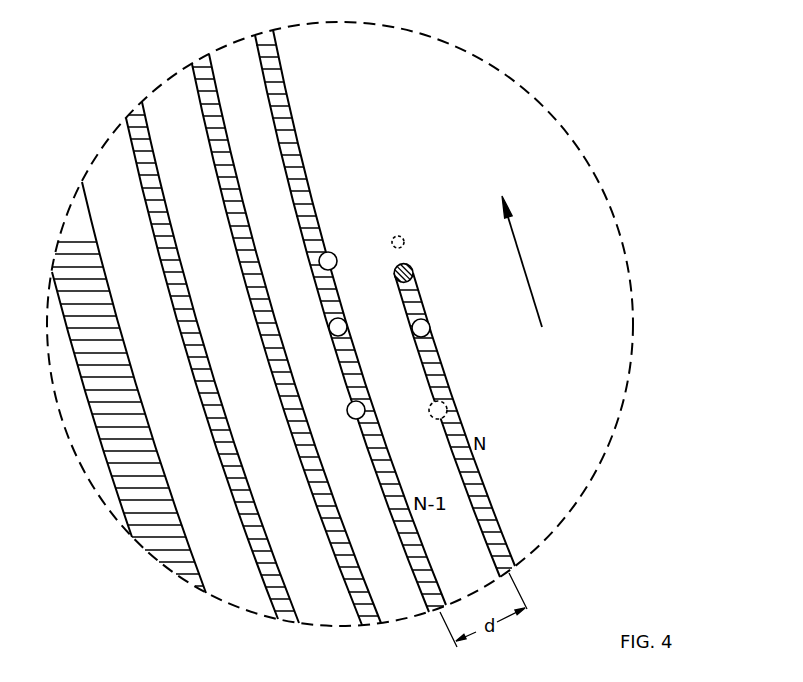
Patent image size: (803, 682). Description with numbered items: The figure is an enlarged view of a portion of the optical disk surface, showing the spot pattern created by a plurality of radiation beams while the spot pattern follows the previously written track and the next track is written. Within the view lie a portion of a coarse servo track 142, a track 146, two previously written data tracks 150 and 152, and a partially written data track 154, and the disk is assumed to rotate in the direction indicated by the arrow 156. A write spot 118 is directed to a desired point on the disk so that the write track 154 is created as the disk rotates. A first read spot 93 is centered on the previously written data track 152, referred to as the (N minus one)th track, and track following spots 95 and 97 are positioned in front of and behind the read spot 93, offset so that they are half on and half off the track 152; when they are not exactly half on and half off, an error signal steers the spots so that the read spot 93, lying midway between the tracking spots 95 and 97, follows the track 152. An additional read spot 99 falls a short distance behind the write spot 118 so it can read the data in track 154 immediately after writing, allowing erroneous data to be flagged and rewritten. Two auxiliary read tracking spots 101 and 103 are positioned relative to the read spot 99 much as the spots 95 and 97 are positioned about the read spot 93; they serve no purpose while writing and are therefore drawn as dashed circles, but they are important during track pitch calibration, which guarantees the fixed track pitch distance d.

The coarse servo track 142 is at (210, 598).
The data track 146 is at (289, 622).
The data track 150 is at (203, 58).
The data track 152 is at (255, 35).
The partially written data track 154 is at (513, 567).
The track following spot 95 is at (336, 253).
The first read spot 93 is at (329, 328).
The track following spot 97 is at (351, 420).
The additional read spot 99 is at (431, 322).
The auxiliary read tracking spot 101 is at (432, 419).
The auxiliary read tracking spot 103 is at (402, 236).
The write spot 118 is at (412, 268).
The arrow 156 is at (520, 240).